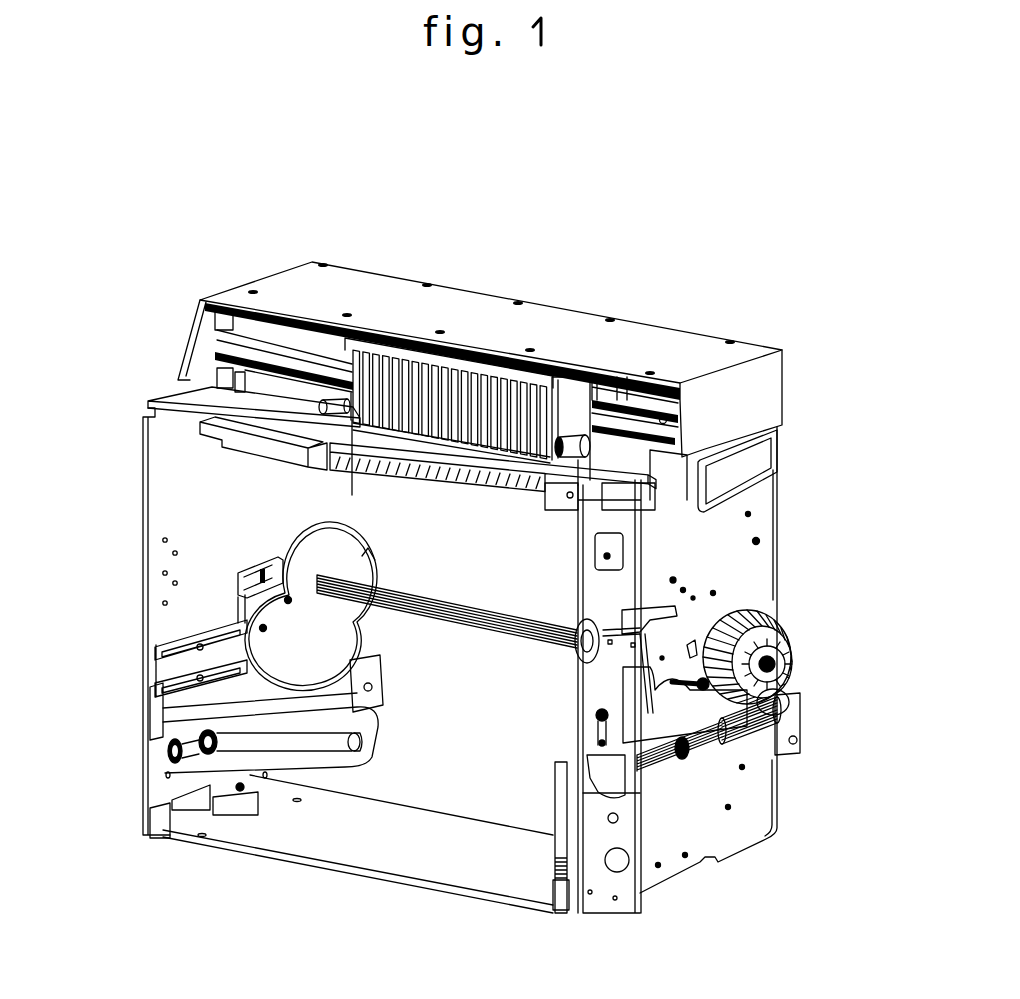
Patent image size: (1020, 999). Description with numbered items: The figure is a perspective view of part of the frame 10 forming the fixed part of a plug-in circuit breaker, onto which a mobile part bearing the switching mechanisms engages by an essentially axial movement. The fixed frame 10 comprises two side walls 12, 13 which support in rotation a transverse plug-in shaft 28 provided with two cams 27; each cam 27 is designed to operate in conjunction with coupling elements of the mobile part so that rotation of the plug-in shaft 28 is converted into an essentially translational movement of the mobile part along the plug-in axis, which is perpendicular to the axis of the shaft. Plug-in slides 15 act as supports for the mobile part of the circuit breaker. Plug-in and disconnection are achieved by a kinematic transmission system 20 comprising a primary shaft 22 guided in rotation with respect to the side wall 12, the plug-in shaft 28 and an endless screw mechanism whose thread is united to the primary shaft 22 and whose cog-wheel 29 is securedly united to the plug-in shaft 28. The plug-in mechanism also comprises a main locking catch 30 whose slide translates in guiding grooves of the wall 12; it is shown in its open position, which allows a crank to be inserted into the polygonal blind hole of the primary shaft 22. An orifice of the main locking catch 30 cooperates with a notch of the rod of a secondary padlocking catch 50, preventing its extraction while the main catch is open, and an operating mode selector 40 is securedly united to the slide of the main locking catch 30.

The frame 10 is at (416, 252).
The side wall 12 is at (753, 570).
The side wall 13 is at (165, 515).
The plug-in slides 15 is at (343, 758).
The kinematic transmission system 20 is at (816, 675).
The primary shaft 22 is at (686, 760).
The cam 27 is at (342, 553).
The plug-in shaft 28 is at (463, 600).
The cog-wheel 29 is at (778, 616).
The main locking catch 30 is at (606, 826).
The operating mode selector 40 is at (590, 730).
The secondary padlocking catch 50 is at (572, 662).